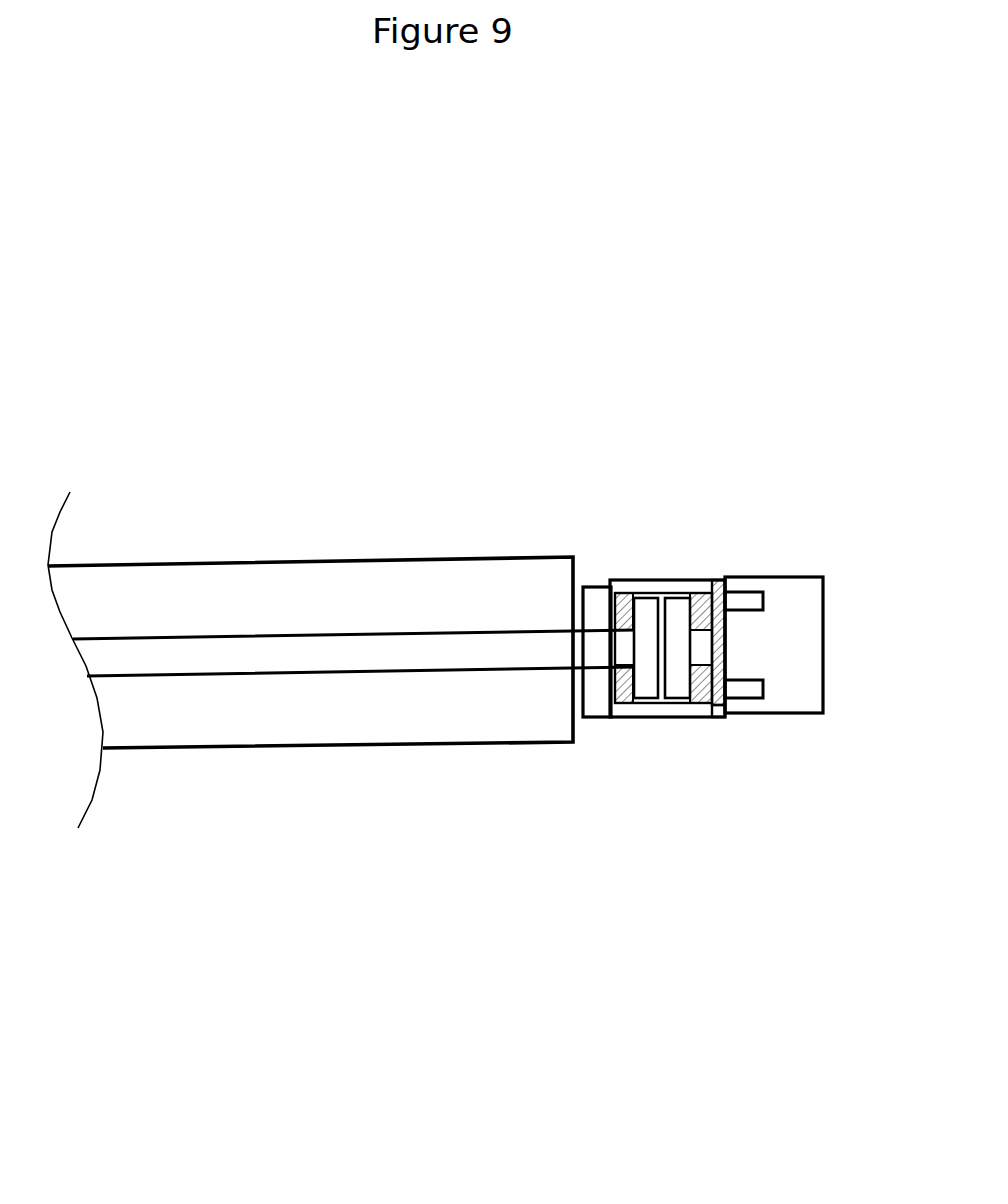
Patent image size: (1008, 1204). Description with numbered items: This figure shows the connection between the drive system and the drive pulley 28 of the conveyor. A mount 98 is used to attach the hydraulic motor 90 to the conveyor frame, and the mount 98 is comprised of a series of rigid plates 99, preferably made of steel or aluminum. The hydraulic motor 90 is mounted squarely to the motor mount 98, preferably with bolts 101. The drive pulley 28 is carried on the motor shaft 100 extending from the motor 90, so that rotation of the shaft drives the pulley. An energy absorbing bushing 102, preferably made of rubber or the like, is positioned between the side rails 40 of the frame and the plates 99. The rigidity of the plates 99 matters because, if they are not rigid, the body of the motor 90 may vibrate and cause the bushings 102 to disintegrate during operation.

The drive pulley 28 is at (317, 558).
The side rails 40 is at (593, 576).
The hydraulic motor 90 is at (825, 638).
The mount 98 is at (609, 778).
The rigid plates 99 is at (700, 582).
The motor shaft 100 is at (276, 670).
The bolts 101 is at (745, 598).
The energy absorbing bushing 102 is at (660, 588).